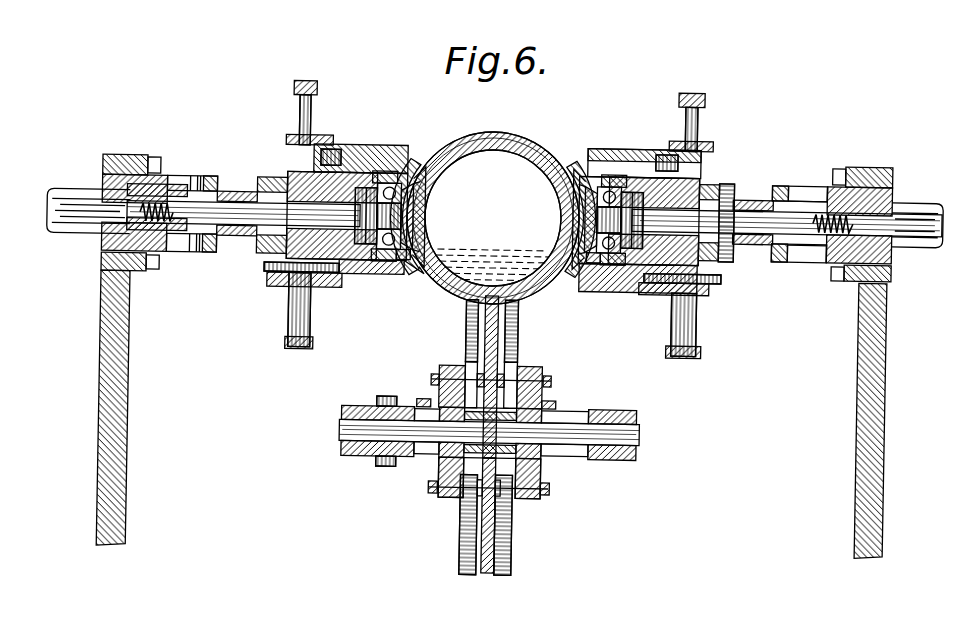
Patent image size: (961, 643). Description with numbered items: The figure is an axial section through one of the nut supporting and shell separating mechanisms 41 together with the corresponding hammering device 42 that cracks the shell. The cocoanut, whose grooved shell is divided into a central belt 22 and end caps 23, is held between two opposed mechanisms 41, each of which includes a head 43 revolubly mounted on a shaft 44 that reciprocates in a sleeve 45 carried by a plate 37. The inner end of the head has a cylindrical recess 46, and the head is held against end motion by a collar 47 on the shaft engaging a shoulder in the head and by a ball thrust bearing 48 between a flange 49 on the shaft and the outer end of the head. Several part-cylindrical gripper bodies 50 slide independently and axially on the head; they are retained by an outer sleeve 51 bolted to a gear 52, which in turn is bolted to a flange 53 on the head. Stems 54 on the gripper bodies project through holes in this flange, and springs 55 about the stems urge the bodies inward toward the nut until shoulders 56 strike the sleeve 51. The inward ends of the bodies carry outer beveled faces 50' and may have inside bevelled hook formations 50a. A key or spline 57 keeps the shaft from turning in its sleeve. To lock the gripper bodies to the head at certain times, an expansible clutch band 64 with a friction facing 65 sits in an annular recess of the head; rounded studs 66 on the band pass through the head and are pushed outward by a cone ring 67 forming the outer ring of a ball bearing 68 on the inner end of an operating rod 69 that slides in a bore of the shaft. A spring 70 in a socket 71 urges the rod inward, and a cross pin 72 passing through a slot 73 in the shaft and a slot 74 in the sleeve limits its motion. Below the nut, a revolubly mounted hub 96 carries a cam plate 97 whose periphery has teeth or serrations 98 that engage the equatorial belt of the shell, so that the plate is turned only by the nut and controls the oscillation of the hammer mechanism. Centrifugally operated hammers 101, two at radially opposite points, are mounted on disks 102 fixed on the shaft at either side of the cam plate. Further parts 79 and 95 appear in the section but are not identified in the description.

The central zone (belt) 22 is at (500, 133).
The end pieces or caps 23 is at (430, 216).
The plate 37 is at (120, 452).
The nut supporting and shell separating mechanism 41 is at (365, 44).
The drive shaft assembly 42 is at (577, 537).
The head 43 is at (380, 175).
The shaft 44 is at (234, 196).
The sleeve 45 is at (170, 183).
The cylindrical recess 46 is at (368, 262).
The collar 47 is at (362, 262).
The ball thrust bearing 48 is at (275, 181).
The flange 49 is at (268, 240).
The gripper bodies 50 is at (500, 213).
The outer beveled faces 50' is at (499, 218).
The bevelled hook formations 50a is at (432, 180).
The outer sleeve 51 is at (360, 148).
The gear 52 is at (300, 84).
The flange 53 is at (318, 139).
The stems 54 is at (330, 152).
The springs 55 is at (340, 147).
The shoulders 56 is at (352, 147).
The key or spline 57 is at (86, 245).
The expansible clutch band 64 is at (396, 176).
The facing of friction material 65 is at (395, 175).
The rounded studs 66 is at (405, 170).
The cone ring 67 is at (408, 264).
The ball bearing 68 is at (418, 274).
The operating rod 69 is at (248, 232).
The spring 70 is at (151, 230).
The socket 71 is at (162, 237).
The cross pin 72 is at (209, 182).
The slot 73 is at (204, 183).
The slot 74 is at (190, 183).
The cross shaft 79 is at (358, 458).
The nut 95 is at (385, 398).
The hub 96 is at (445, 475).
The cam plate 97 is at (487, 527).
The teeth or serrations 98 is at (490, 576).
The centrifugally operated hammers 101 is at (488, 320).
The disks 102 is at (442, 372).